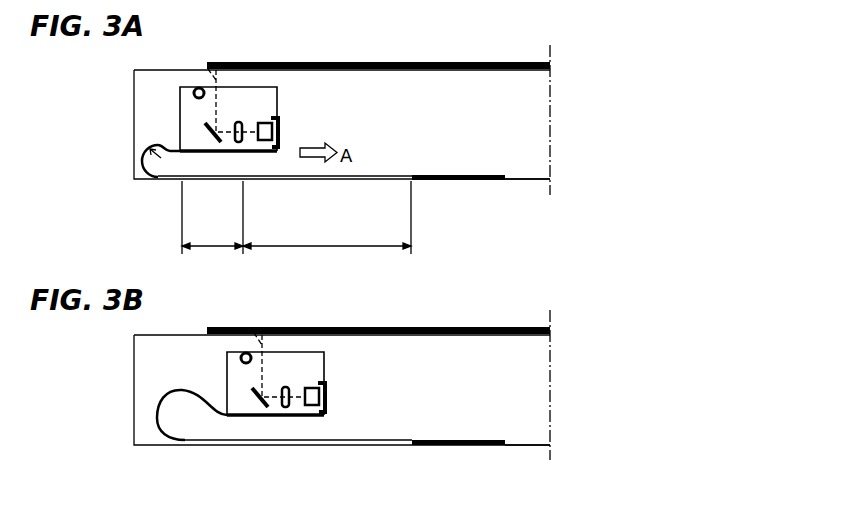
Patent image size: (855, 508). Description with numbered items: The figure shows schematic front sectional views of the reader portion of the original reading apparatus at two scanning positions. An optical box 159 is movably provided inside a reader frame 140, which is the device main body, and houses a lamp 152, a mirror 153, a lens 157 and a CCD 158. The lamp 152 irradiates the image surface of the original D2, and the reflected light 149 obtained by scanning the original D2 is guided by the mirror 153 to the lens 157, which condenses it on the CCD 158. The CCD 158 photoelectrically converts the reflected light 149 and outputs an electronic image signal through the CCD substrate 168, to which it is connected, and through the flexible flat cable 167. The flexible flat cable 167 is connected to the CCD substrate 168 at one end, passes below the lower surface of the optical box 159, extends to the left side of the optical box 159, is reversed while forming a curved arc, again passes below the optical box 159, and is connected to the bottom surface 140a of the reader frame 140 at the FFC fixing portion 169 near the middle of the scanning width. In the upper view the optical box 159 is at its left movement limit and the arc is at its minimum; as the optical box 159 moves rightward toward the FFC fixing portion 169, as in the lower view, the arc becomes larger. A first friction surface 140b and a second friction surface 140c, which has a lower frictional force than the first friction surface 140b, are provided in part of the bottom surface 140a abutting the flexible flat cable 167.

In FIG. 3A, the reader frame 140 is at (347, 178).
In FIG. 3B, the reader frame 140 is at (393, 441).
In FIG. 3A, the bottom surface of the reader frame 140a is at (518, 178).
In FIG. 3B, the bottom surface of the reader frame 140a is at (519, 443).
In FIG. 3A, the first friction surface 140b is at (385, 247).
In FIG. 3A, the second friction surface 140c is at (197, 247).
In FIG. 3A, the reflected light 149 is at (222, 72).
In FIG. 3B, the reflected light 149 is at (267, 337).
In FIG. 3A, the lamp 152 is at (197, 87).
In FIG. 3B, the lamp 152 is at (244, 352).
In FIG. 3A, the mirror 153 is at (215, 142).
In FIG. 3B, the mirror 153 is at (260, 406).
In FIG. 3A, the lens 157 is at (238, 121).
In FIG. 3B, the lens 157 is at (285, 386).
In FIG. 3A, the CCD 158 is at (265, 142).
In FIG. 3B, the CCD 158 is at (311, 408).
In FIG. 3A, the optical box 159 is at (180, 118).
In FIG. 3B, the optical box 159 is at (275, 374).
In FIG. 3A, the flexible flat cable 167 is at (158, 179).
In FIG. 3B, the flexible flat cable 167 is at (200, 446).
In FIG. 3A, the CCD substrate 168 is at (281, 125).
In FIG. 3B, the CCD substrate 168 is at (327, 390).
In FIG. 3A, the FFC fixing portion 169 is at (444, 181).
In FIG. 3B, the FFC fixing portion 169 is at (464, 446).
In FIG. 3A, the original D2 is at (438, 62).
In FIG. 3B, the original D2 is at (485, 327).